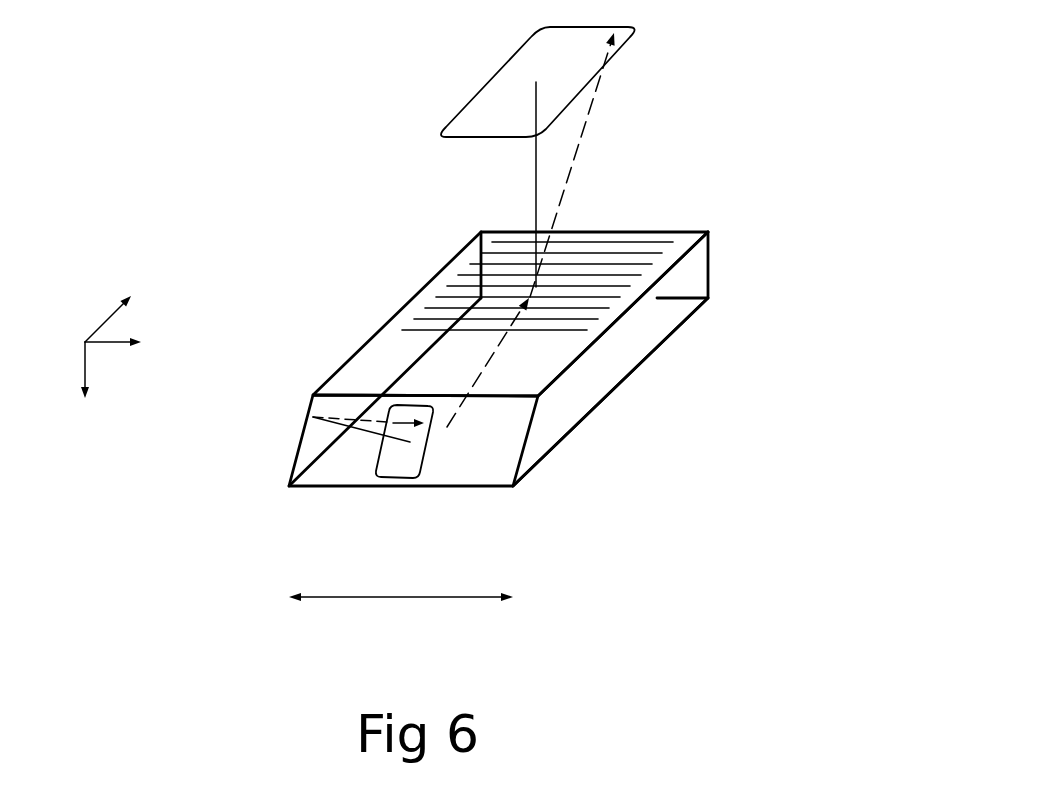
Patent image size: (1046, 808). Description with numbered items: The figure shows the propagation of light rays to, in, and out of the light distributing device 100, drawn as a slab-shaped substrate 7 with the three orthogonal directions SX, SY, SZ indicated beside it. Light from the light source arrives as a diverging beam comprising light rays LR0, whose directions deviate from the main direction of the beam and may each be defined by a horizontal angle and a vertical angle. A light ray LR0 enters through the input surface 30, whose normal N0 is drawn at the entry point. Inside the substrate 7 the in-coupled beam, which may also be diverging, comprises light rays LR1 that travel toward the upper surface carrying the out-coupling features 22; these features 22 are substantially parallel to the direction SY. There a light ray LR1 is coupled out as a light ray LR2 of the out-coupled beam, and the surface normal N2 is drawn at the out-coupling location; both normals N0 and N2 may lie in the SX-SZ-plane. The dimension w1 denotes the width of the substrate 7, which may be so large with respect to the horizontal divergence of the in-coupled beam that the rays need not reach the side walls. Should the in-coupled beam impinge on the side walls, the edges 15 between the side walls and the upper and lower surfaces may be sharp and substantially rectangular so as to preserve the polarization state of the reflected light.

The light distributing device 100 is at (750, 159).
The substrate 7 is at (709, 243).
The edges of substrate 15 is at (665, 341).
The out-coupling features 22 is at (638, 253).
The input surface 30 is at (310, 438).
The light ray of light beam B0 LR0 is at (360, 424).
The light ray of in-coupled light beam B1 LR1 is at (496, 351).
The light ray of out-coupled light beam B2 LR2 is at (590, 104).
The normal of input surface N0 is at (340, 424).
The surface normal of out-coupling area N2 is at (535, 103).
The width of substrate w1 is at (401, 580).
The direction SX is at (121, 303).
The direction SY is at (134, 343).
The direction SZ is at (80, 385).